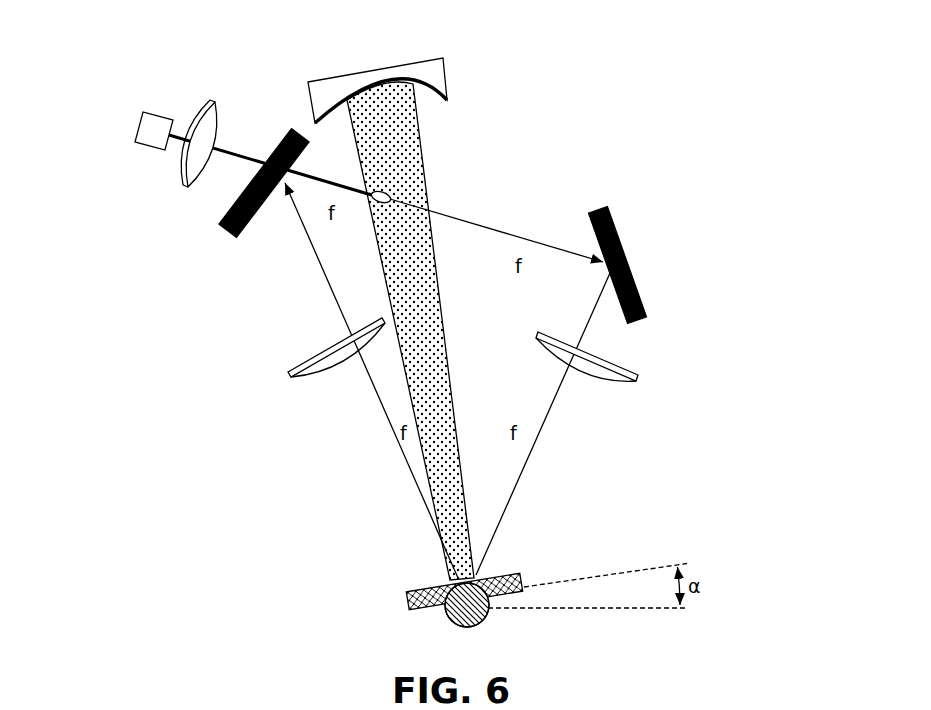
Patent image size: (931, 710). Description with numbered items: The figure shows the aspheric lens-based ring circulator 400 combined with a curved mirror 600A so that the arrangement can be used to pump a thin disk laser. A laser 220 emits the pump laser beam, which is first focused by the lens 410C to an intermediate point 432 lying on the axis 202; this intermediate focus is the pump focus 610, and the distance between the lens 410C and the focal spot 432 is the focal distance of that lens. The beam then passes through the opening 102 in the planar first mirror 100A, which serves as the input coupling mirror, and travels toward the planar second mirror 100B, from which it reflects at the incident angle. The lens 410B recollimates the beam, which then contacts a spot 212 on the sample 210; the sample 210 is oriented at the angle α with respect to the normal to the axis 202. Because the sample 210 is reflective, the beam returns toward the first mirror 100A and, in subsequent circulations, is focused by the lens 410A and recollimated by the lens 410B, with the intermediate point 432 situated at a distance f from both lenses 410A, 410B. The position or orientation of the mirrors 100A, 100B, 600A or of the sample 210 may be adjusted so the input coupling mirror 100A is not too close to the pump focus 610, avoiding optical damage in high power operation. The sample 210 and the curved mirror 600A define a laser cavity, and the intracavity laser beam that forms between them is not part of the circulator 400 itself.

The curved mirror 600A is at (333, 77).
The opening 102 is at (263, 152).
The laser 220 is at (150, 112).
The lens 410C is at (187, 173).
The first mirror 100A is at (223, 210).
The axis 202 is at (394, 164).
The intermediate point 432 is at (393, 200).
The pump focus 610 is at (366, 208).
The second mirror 100B is at (631, 270).
The lens 410A is at (330, 378).
The lens 410B is at (605, 387).
The spot 212 is at (453, 577).
The sample 210 is at (422, 606).
The circulator 400 is at (677, 112).